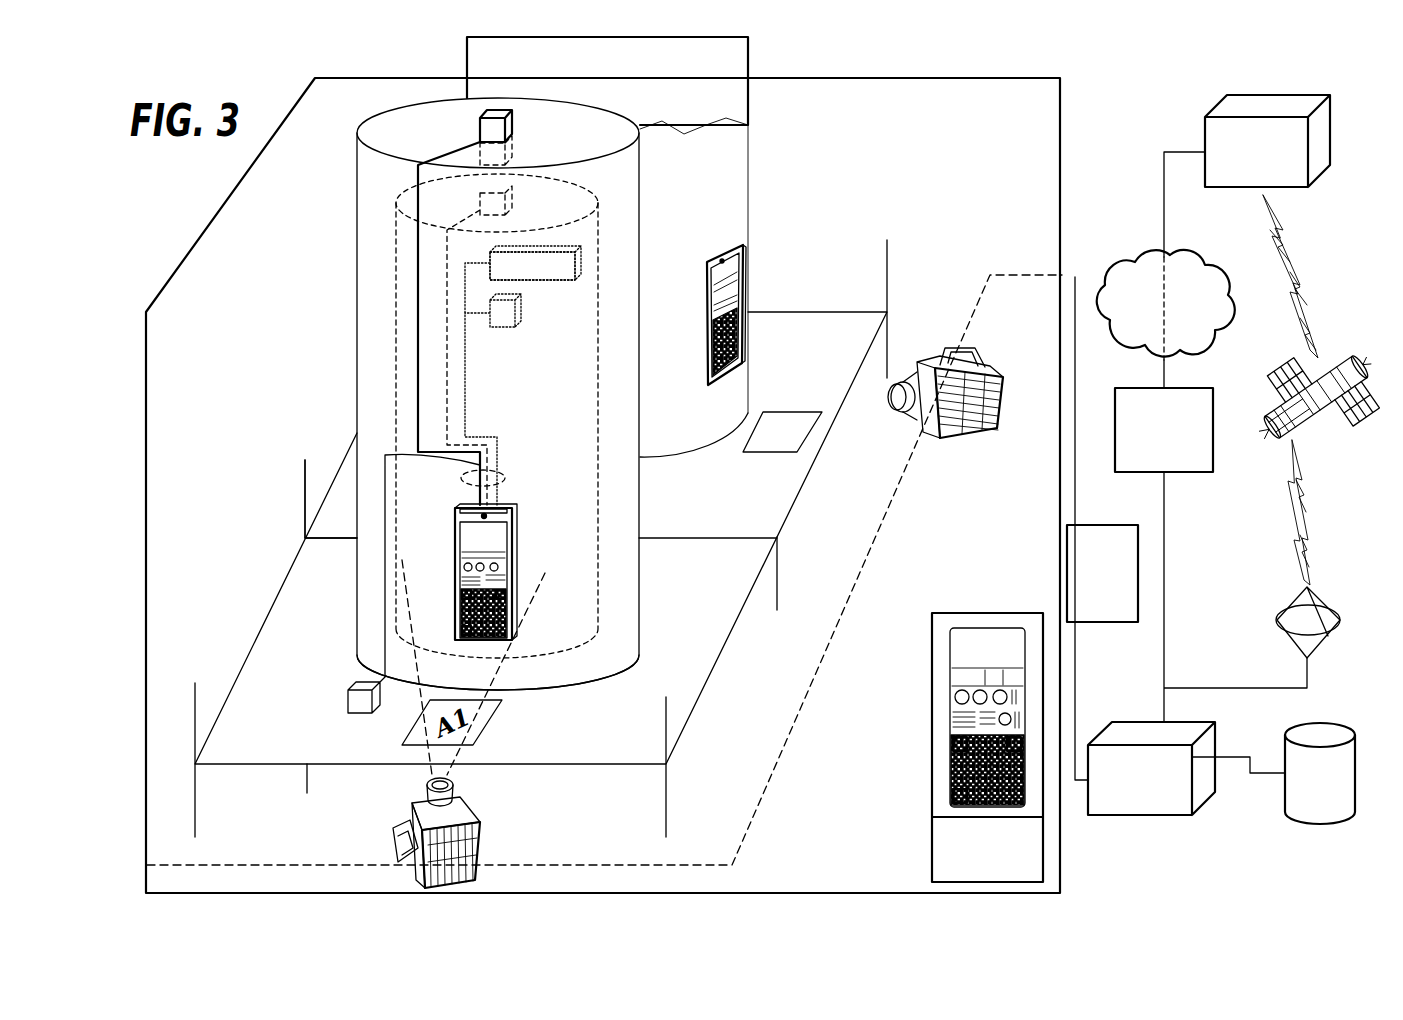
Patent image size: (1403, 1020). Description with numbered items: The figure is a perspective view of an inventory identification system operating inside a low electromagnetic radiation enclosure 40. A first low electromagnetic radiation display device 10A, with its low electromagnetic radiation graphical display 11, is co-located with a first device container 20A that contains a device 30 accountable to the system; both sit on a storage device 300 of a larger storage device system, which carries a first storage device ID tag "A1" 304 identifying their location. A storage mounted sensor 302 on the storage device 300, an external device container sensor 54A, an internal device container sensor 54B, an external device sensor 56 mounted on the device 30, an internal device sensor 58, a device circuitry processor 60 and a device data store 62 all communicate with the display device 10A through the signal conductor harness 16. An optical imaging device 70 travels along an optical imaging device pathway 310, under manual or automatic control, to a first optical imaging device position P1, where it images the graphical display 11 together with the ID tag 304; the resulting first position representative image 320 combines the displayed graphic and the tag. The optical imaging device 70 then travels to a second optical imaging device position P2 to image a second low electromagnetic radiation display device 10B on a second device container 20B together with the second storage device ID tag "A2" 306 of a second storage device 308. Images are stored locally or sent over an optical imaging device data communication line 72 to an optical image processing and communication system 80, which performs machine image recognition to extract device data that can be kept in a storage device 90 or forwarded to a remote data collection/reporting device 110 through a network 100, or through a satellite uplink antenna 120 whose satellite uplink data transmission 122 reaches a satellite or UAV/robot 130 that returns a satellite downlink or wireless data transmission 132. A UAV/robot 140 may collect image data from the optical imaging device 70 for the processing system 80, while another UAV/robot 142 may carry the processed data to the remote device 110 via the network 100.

The first low electromagnetic radiation display device 10A is at (519, 548).
The second low electromagnetic radiation display device 10B is at (740, 245).
The low electromagnetic radiation graphical display 11 is at (492, 580).
The signal conductor harness 16 is at (512, 470).
The first device container 20A is at (375, 326).
The second device container 20B is at (735, 148).
The device 30 is at (393, 380).
The low electromagnetic radiation enclosure 40 is at (252, 215).
The external device container sensor 54A is at (480, 118).
The internal device container sensor 54B is at (480, 152).
The external device sensor 56 is at (480, 205).
The internal device sensor 58 is at (490, 310).
The device circuitry processor 60 is at (490, 262).
The device data store 62 is at (532, 266).
The optical imaging device 70 is at (431, 833).
The optical imaging device data communication line 72 is at (1077, 277).
The optical image processing and communication system 80 is at (1151, 768).
The storage device 90 is at (1320, 773).
The network 100 is at (1166, 303).
The remote data collection/reporting device 110 is at (1267, 141).
The satellite uplink antenna 120 is at (1295, 648).
The satellite uplink data transmission 122 is at (1300, 523).
The satellite or Unmanned Aerial Vehicle (UAV)/robot 130 is at (1325, 400).
The satellite downlink or wireless data transmission 132 is at (1300, 285).
The Unmanned Aerial Vehicle (UAV)/robot 140 is at (1102, 573).
The Unmanned Aerial Vehicle (UAV)/robot 142 is at (1164, 430).
The storage device 300 is at (303, 623).
The storage mounted sensor 302 is at (360, 700).
The first storage device ID tag "A1" 304 is at (640, 678).
The second storage device ID tag "A2" 306 is at (810, 418).
The second storage device 308 is at (347, 482).
The optical imaging device pathway 310 is at (832, 654).
The first optical imaging device position P1 representative image 320 is at (930, 757).
The first optical imaging device position P1 is at (480, 862).
The second optical imaging device position P2 is at (935, 435).